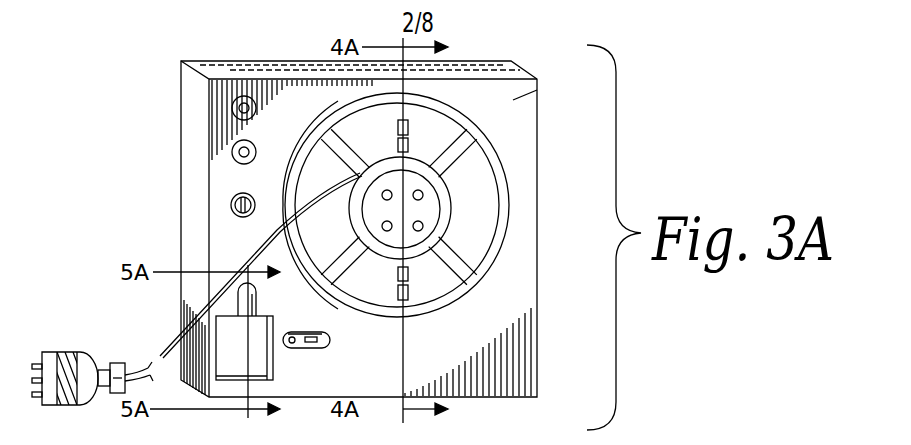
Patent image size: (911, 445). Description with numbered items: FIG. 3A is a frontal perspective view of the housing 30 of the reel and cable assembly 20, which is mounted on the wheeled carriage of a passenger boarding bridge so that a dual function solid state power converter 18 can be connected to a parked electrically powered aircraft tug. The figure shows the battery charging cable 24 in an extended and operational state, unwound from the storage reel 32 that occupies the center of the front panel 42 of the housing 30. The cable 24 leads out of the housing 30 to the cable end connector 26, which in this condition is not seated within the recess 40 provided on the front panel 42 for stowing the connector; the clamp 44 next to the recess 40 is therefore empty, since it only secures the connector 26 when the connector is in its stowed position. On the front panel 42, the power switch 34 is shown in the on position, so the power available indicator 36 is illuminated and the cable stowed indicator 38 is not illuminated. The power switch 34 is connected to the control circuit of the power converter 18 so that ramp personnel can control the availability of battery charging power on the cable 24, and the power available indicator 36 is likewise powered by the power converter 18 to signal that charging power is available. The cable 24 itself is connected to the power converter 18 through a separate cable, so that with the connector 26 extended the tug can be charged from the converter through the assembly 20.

The dual function solid state power converter 18 is at (248, 38).
The reel and cable assembly 20 is at (484, 66).
The cable 24 is at (247, 262).
The cable end connector 26 is at (48, 362).
The housing 30 is at (193, 85).
The storage reel 32 is at (505, 169).
The power switch 34 is at (232, 207).
The power available indicator 36 is at (234, 151).
The cable stowed indicator 38 is at (238, 109).
The recess 40 is at (258, 360).
The front panel 42 is at (513, 100).
The clamp 44 is at (298, 346).